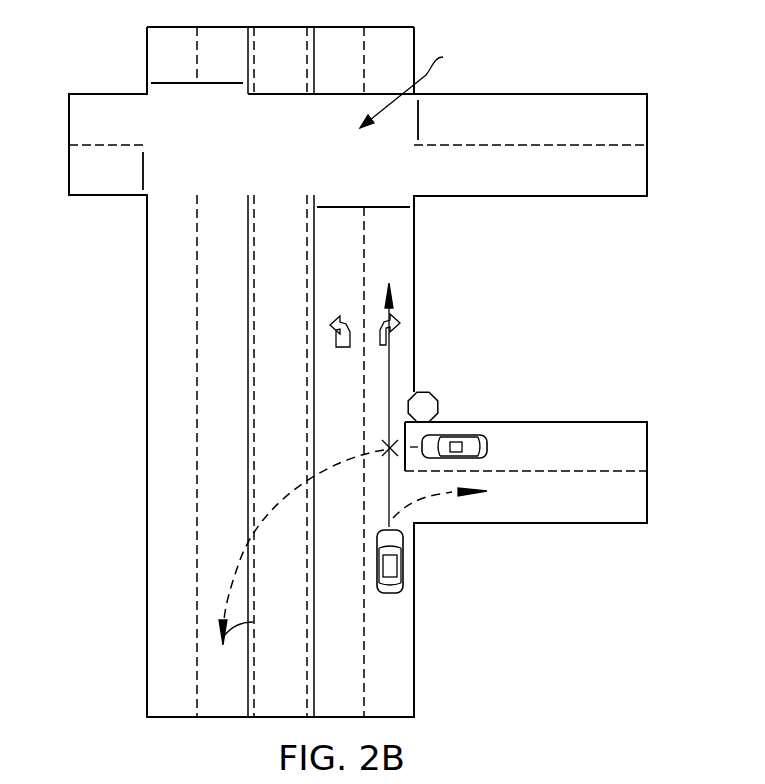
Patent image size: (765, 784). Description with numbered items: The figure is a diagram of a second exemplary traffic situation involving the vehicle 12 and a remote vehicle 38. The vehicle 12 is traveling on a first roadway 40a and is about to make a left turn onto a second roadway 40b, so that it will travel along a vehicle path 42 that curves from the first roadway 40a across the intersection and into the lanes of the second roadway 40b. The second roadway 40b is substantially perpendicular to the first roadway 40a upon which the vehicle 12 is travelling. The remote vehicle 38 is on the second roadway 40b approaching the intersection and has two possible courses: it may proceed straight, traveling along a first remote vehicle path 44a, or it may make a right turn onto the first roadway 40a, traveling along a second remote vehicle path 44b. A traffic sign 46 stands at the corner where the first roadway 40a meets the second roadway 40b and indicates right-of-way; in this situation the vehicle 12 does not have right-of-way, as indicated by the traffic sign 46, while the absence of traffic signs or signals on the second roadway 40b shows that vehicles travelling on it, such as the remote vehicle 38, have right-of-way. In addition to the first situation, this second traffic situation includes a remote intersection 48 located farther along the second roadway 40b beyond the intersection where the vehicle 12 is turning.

The vehicle 12 is at (468, 443).
The remote vehicle 38 is at (392, 568).
The first roadway 40a is at (573, 440).
The second roadway 40b is at (222, 466).
The vehicle path 42 is at (233, 578).
The first remote vehicle path 44a is at (392, 356).
The second remote vehicle path 44b is at (433, 499).
The traffic sign 46 is at (433, 396).
The remote intersection 48 is at (413, 85).